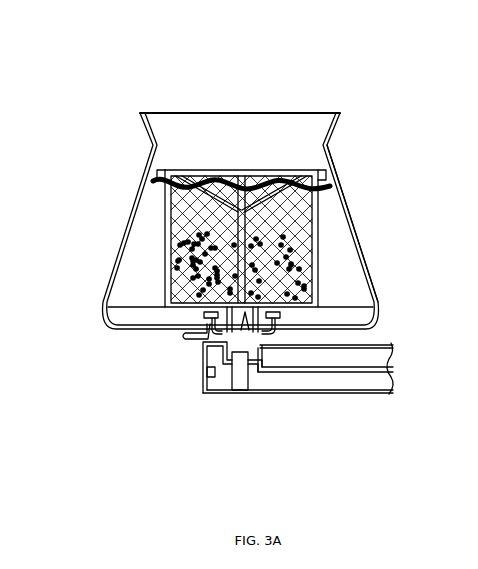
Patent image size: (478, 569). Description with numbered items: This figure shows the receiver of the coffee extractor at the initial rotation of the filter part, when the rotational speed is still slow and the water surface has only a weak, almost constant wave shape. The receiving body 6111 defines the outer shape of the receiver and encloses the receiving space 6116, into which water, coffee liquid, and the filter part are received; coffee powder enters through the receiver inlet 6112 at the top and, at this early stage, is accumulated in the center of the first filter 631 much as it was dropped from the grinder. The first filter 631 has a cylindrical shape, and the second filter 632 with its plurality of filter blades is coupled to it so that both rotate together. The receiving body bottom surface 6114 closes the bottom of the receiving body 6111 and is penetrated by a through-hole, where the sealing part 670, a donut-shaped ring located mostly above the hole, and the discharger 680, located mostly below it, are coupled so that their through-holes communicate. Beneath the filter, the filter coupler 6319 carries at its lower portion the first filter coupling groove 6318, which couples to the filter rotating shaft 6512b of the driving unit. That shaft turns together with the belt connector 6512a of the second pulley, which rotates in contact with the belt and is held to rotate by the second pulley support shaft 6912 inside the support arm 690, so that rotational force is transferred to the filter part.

The receiving body 6111 is at (150, 124).
The receiver inlet 6112 is at (266, 124).
The receiving space 6116 is at (342, 277).
The receiving body bottom surface 6114 is at (135, 333).
The first filter 631 is at (165, 260).
The second filter 632 is at (183, 211).
The first filter coupling groove 6318 is at (245, 315).
The filter coupler 6319 is at (200, 336).
The discharger 680 is at (218, 313).
The sealing part 670 is at (276, 323).
The belt connector 6512a is at (241, 382).
The filter rotating shaft 6512b is at (222, 318).
The second pulley support shaft 6912 is at (261, 385).
The support arm 690 is at (366, 392).